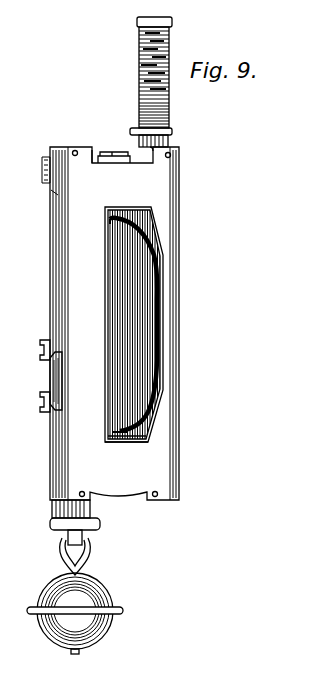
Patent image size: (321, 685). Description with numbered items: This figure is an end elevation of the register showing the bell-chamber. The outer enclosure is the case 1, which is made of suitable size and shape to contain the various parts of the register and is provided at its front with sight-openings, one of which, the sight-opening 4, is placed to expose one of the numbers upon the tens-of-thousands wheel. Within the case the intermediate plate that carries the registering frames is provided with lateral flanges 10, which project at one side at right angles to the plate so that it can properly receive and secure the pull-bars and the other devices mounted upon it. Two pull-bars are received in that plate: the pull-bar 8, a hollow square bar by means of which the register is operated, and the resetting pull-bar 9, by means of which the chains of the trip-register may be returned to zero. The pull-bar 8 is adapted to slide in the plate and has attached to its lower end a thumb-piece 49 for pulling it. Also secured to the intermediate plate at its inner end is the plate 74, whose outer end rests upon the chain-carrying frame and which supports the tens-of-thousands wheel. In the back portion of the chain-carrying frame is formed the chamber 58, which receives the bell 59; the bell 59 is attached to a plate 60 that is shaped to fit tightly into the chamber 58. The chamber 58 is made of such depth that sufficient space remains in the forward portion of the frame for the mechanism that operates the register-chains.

The case 1 is at (114, 323).
The sight-opening 4 is at (113, 171).
The pull-bar 8 is at (88, 516).
The resetting pull-bar 9 is at (170, 142).
The lateral flanges 10 is at (56, 444).
The thumb-piece 49 is at (98, 598).
The chamber 58 is at (152, 431).
The bell 59 is at (165, 318).
The plate 60 is at (160, 240).
The plate 74 is at (58, 388).